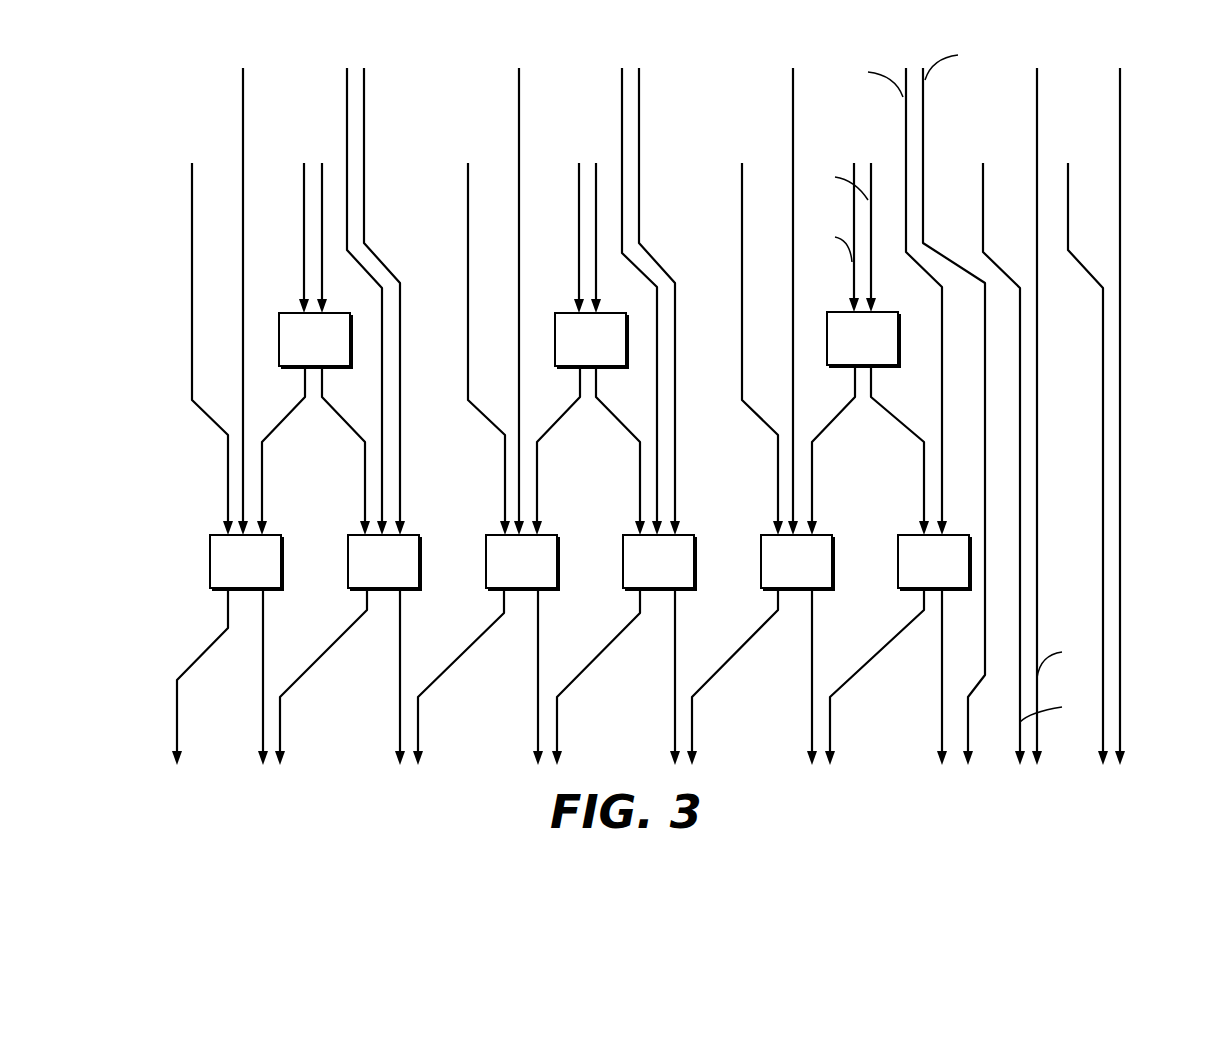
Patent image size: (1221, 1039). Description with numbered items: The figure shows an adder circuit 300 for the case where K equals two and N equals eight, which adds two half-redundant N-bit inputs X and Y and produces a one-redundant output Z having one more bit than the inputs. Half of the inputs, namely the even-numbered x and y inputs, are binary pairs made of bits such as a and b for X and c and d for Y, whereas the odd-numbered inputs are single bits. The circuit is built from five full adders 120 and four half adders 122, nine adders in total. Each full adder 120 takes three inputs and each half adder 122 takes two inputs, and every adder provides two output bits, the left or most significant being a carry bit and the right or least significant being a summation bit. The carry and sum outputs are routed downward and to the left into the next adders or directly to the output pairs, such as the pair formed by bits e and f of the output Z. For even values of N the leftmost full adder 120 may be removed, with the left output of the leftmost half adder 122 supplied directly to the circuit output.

The full adder 120 is at (420, 560).
The half adder 122 is at (901, 338).
The adder circuit 300 is at (688, 425).